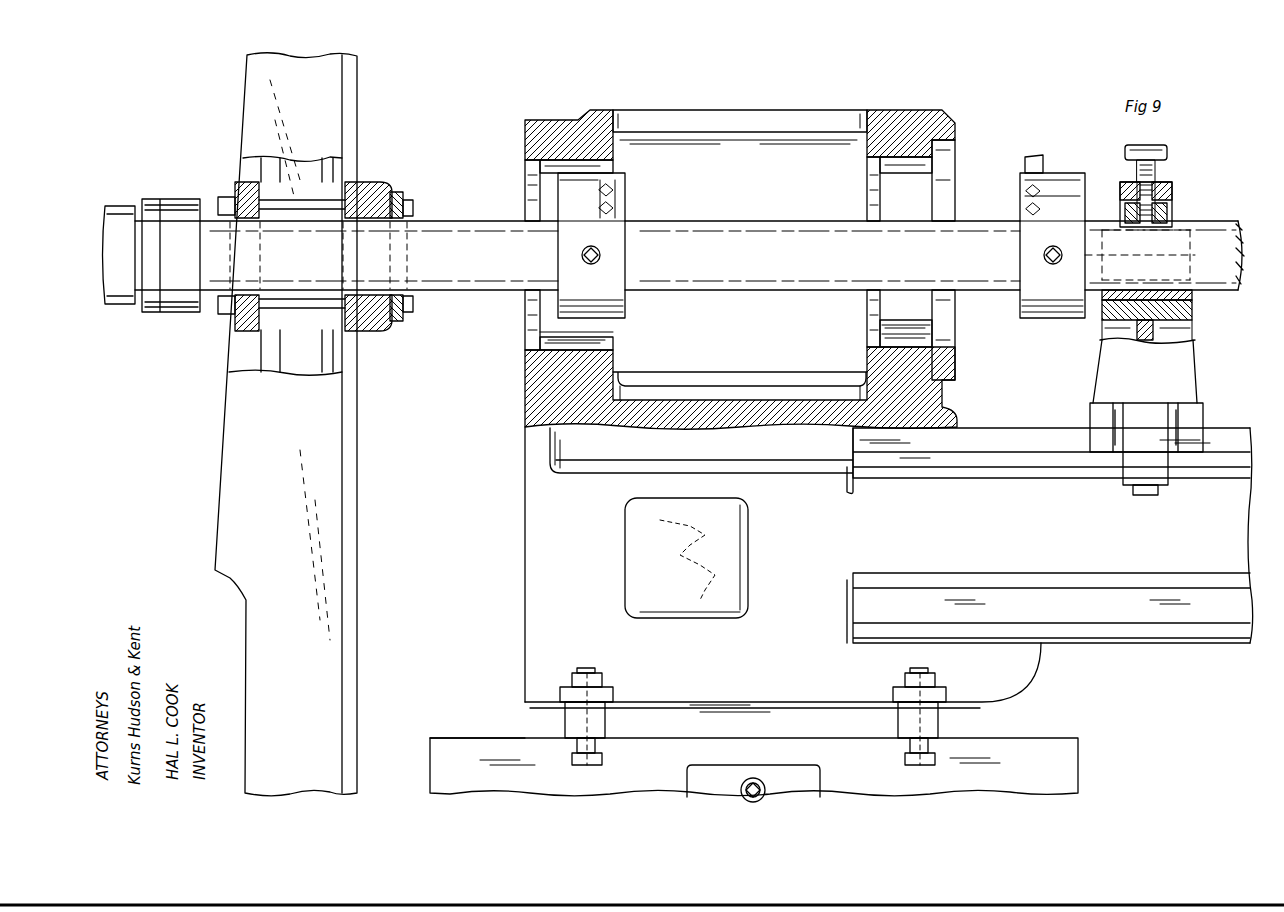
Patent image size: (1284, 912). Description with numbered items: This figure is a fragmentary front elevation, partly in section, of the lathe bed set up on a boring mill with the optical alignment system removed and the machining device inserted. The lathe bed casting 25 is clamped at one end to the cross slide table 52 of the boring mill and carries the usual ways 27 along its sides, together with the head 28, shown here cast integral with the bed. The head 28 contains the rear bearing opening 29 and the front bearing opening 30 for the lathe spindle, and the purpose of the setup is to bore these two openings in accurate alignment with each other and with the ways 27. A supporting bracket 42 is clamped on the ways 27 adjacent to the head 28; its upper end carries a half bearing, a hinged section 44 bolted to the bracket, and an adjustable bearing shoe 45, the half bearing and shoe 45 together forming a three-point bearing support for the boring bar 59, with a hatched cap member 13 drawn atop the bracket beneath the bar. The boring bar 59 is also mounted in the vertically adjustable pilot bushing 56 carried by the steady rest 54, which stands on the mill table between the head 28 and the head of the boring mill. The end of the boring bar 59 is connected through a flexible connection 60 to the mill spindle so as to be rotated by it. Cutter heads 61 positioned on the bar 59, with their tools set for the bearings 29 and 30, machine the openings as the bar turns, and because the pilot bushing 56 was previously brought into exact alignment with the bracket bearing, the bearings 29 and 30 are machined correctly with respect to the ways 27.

The cap 13 is at (1192, 296).
The bed casting 25 is at (841, 582).
The ways 27 is at (993, 432).
The head 28 is at (596, 110).
The rear bearing opening 29 is at (612, 347).
The front bearing opening 30 is at (893, 341).
The supporting bracket 42 is at (1100, 362).
The hinged section 44 is at (1162, 182).
The adjustable bearing shoe 45 is at (1170, 212).
The cross slide table 52 is at (1008, 738).
The steady rest 54 is at (352, 445).
The pilot bushing 56 is at (397, 185).
The boring bar 59 is at (478, 291).
The flexible connection 60 is at (192, 312).
The cutter head 61 is at (625, 306).